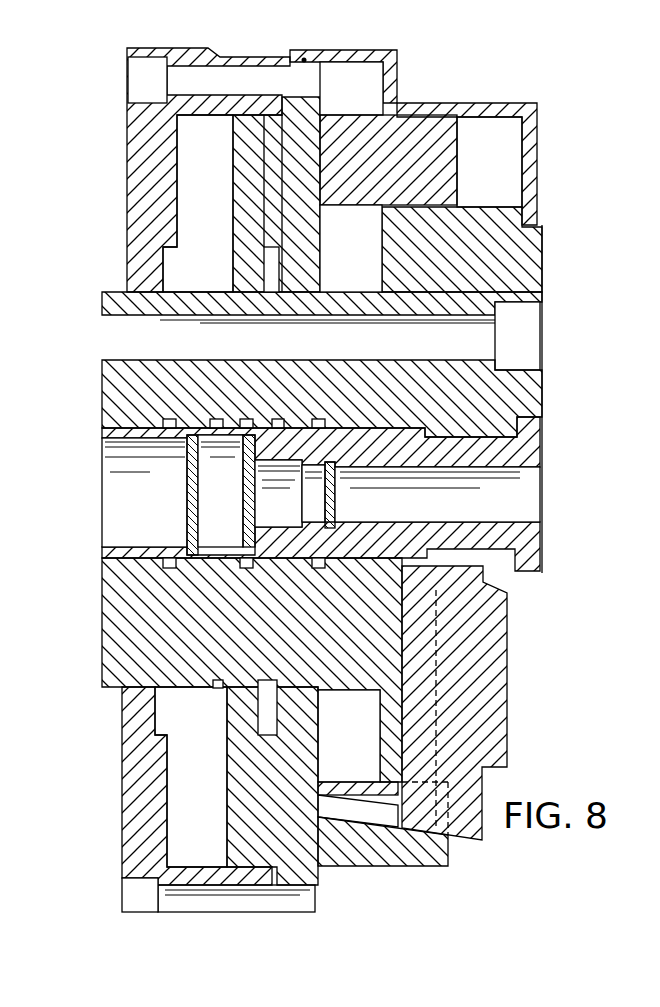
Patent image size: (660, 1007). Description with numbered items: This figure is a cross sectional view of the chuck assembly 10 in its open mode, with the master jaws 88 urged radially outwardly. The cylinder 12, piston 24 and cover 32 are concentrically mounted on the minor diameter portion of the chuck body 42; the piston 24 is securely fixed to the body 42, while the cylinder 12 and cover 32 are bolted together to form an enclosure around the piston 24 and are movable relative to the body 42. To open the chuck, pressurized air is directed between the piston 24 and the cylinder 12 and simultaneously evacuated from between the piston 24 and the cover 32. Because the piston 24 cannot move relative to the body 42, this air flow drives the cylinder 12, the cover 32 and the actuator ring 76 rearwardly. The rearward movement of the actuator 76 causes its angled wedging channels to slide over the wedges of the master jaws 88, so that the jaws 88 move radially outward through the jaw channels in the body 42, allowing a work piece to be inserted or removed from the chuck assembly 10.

The chuck assembly 10 is at (512, 80).
The cylinder 12 is at (127, 201).
The piston 24 is at (237, 255).
The cover 32 is at (310, 130).
The body 42 is at (515, 252).
The actuator 76 is at (443, 165).
The master jaws 88 is at (498, 663).